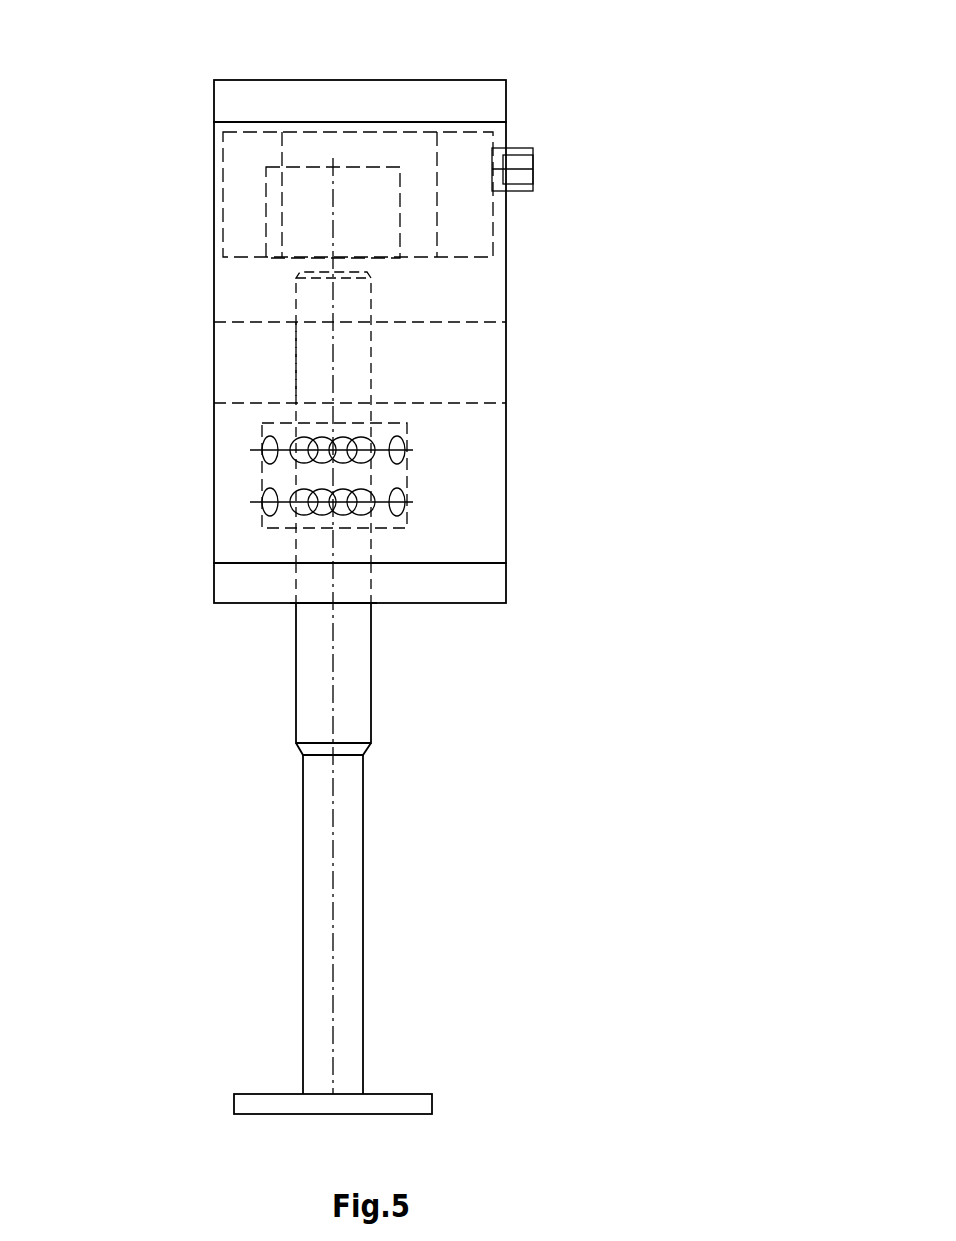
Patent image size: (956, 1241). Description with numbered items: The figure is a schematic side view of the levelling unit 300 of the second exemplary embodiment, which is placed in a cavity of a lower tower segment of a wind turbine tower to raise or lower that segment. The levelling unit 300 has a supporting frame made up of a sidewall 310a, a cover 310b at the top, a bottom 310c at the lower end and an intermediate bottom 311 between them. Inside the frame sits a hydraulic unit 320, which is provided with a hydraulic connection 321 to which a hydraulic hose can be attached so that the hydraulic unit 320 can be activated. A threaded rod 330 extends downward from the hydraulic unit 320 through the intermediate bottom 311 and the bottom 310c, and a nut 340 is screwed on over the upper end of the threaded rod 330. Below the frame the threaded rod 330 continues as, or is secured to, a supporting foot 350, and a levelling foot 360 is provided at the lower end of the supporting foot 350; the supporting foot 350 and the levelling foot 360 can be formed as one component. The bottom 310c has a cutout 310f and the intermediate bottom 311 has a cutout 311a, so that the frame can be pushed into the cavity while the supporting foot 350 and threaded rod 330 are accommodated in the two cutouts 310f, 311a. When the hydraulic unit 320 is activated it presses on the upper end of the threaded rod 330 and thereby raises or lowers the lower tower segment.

The levelling unit 300 is at (553, 38).
The sidewall 310a is at (480, 537).
The cover 310b is at (492, 108).
The bottom 310c is at (482, 593).
The cutout 310f is at (306, 589).
The intermediate bottom 311 is at (487, 373).
The cutout 311a is at (310, 362).
The hydraulic unit 320 is at (238, 210).
The hydraulic connection 321 is at (533, 170).
The threaded rod 330 is at (372, 290).
The nut 340 is at (407, 460).
The supporting foot 350 is at (364, 915).
The levelling foot 360 is at (415, 1094).